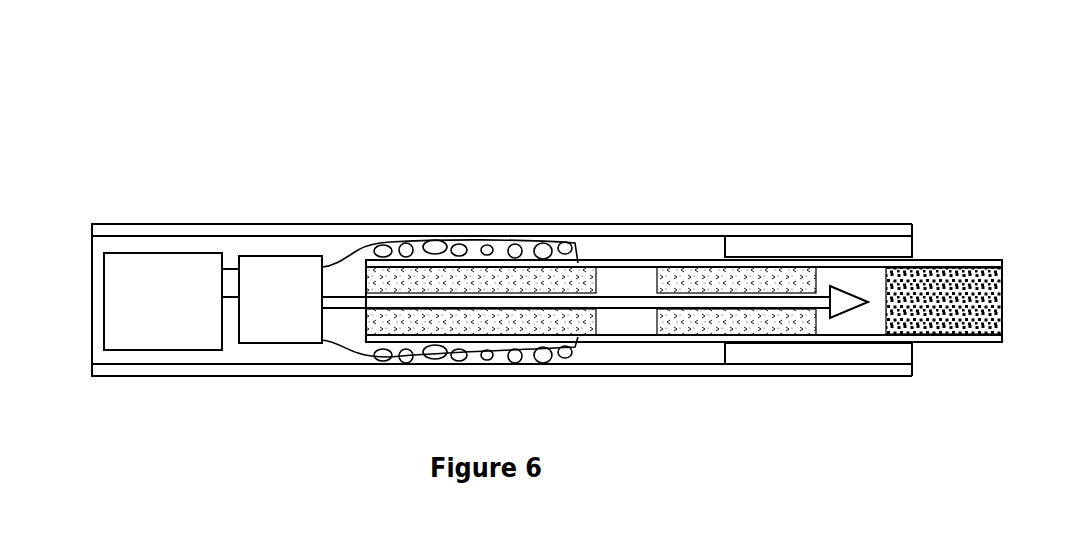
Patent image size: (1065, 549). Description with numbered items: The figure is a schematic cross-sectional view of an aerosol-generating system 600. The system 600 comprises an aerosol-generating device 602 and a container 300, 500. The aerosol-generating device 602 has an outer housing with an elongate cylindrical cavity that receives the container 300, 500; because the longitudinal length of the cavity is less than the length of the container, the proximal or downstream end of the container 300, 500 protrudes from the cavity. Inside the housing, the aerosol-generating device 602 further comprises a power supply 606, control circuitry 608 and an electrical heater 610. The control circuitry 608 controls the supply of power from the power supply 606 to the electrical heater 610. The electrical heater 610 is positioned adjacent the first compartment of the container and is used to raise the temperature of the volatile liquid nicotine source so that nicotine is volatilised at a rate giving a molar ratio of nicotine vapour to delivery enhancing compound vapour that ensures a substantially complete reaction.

The aerosol-generating system 600 is at (460, 114).
The aerosol-generating device 602 is at (333, 230).
The power supply 606 is at (138, 340).
The control circuitry 608 is at (277, 325).
The electrical heater 610 is at (513, 253).
The container 300 is at (963, 243).
The container 500 is at (684, 301).